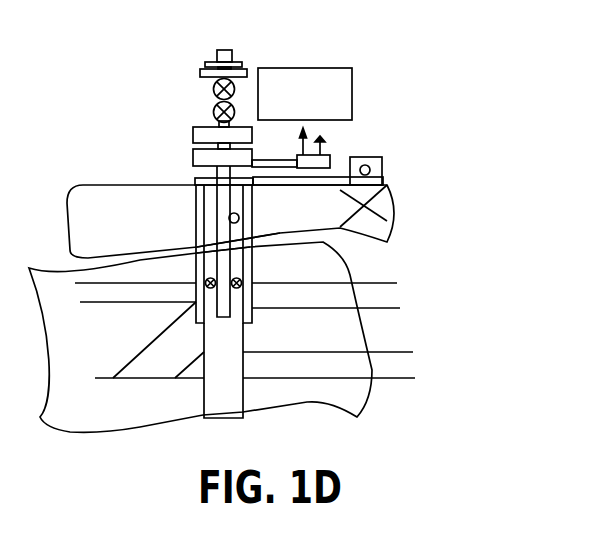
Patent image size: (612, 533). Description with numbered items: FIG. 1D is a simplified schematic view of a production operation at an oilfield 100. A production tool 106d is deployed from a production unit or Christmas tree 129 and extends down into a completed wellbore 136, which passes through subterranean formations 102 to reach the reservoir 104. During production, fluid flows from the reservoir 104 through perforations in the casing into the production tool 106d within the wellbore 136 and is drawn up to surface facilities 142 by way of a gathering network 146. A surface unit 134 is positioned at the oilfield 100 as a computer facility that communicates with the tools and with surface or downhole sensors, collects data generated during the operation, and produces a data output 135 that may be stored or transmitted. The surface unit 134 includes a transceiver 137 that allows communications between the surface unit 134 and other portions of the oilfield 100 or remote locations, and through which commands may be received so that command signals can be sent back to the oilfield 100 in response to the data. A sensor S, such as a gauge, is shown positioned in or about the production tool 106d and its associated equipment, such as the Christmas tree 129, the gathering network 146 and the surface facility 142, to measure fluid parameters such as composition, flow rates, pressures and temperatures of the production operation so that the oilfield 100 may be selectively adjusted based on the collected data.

The oilfield 100 is at (172, 130).
The subterranean formations 102 is at (252, 308).
The reservoir 104 is at (335, 341).
The production tool 106d is at (207, 288).
The Christmas tree 129 is at (232, 55).
The surface unit 134 is at (299, 148).
The data output 135 is at (353, 95).
The wellbore 136 is at (240, 218).
The transceiver 137 is at (327, 147).
The surface facilities 142 is at (383, 167).
The gathering network 146 is at (387, 221).
The sensor S is at (368, 166).